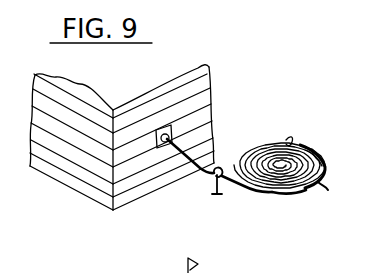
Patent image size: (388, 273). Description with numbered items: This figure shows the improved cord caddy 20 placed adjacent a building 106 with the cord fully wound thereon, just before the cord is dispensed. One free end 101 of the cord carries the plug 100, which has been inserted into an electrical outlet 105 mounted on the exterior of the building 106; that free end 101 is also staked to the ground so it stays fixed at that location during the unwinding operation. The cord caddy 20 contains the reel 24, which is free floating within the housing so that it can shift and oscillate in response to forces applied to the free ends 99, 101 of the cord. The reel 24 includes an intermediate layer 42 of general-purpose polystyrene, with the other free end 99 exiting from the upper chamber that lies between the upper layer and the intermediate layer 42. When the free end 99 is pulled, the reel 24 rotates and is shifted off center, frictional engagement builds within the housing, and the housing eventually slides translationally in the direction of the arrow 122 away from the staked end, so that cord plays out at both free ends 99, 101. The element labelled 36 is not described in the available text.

The building 106 is at (86, 110).
The electrical outlet 105 is at (171, 132).
The plug 100 is at (165, 148).
The free end 101 is at (214, 176).
The cord caddy 20 is at (262, 121).
The free end 99 is at (290, 137).
The reel 24 is at (313, 160).
The cable end 36 is at (321, 187).
The arrow 122 is at (303, 196).
The intermediate layer 42 is at (233, 272).